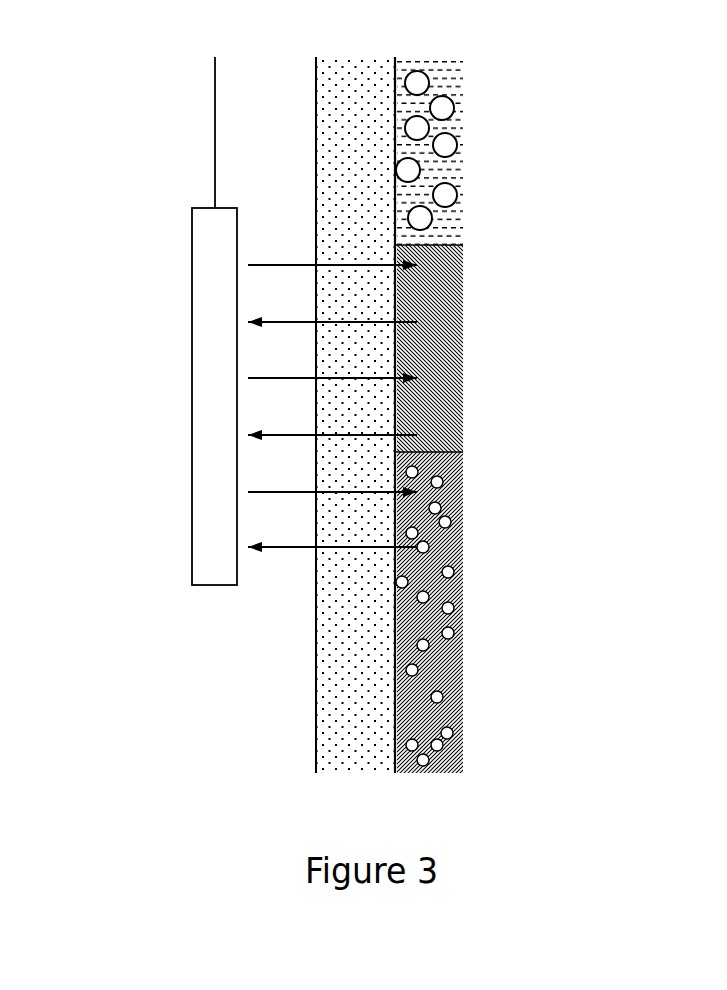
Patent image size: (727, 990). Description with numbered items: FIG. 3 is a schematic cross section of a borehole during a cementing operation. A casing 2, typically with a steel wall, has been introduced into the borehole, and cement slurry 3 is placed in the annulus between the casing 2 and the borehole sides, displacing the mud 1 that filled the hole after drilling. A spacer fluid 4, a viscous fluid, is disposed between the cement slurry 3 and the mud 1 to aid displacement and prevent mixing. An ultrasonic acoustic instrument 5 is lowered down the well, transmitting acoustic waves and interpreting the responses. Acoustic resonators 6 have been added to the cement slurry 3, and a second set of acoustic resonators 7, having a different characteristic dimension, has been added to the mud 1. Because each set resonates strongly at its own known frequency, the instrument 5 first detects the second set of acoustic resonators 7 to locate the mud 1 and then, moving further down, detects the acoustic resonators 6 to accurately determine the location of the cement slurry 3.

The mud 1 is at (438, 75).
The casing 2 is at (362, 660).
The cement slurry 3 is at (430, 530).
The spacer fluid 4 is at (438, 340).
The ultrasonic acoustic instrument 5 is at (204, 397).
The acoustic resonators 6 is at (443, 730).
The second set of acoustic resonators 7 is at (440, 148).